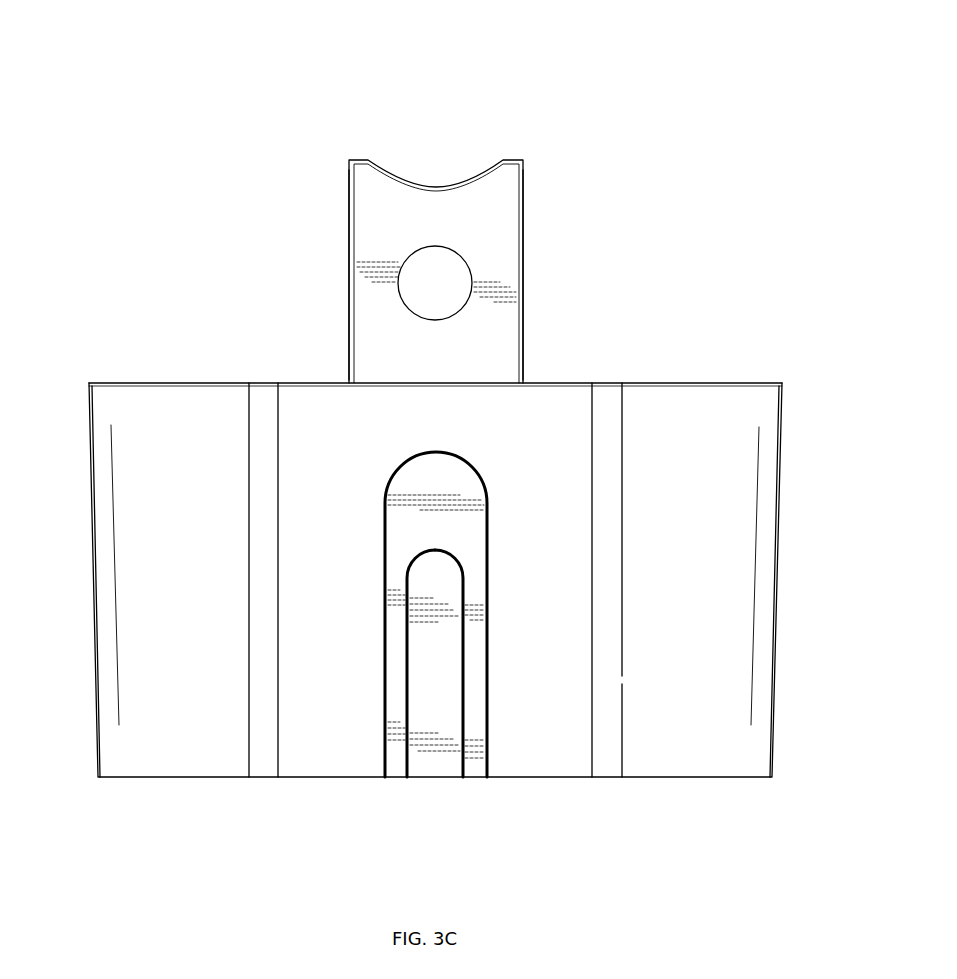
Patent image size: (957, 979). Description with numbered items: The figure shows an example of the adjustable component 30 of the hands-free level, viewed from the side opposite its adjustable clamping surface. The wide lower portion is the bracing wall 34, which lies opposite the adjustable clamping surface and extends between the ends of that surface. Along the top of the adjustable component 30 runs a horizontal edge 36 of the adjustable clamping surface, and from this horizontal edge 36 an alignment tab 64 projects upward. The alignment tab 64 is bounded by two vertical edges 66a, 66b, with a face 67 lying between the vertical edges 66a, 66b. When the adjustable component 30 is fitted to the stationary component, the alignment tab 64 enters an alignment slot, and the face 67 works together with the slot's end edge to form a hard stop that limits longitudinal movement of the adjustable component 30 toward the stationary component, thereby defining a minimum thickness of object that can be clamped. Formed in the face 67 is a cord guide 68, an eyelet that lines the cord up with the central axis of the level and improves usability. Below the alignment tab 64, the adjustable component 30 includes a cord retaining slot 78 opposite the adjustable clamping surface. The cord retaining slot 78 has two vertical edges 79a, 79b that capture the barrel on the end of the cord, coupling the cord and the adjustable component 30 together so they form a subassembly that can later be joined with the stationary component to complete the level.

The adjustable component 30 is at (632, 78).
The bracing wall 34 is at (562, 760).
The horizontal edge 36 is at (152, 383).
The alignment tab 64 is at (410, 180).
The vertical edge 66a is at (348, 312).
The vertical edge 66b is at (523, 272).
The face 67 is at (447, 350).
The cord guide 68 is at (468, 262).
The cord retaining slot 78 is at (411, 535).
The vertical edge 79a is at (383, 758).
The vertical edge 79b is at (488, 687).